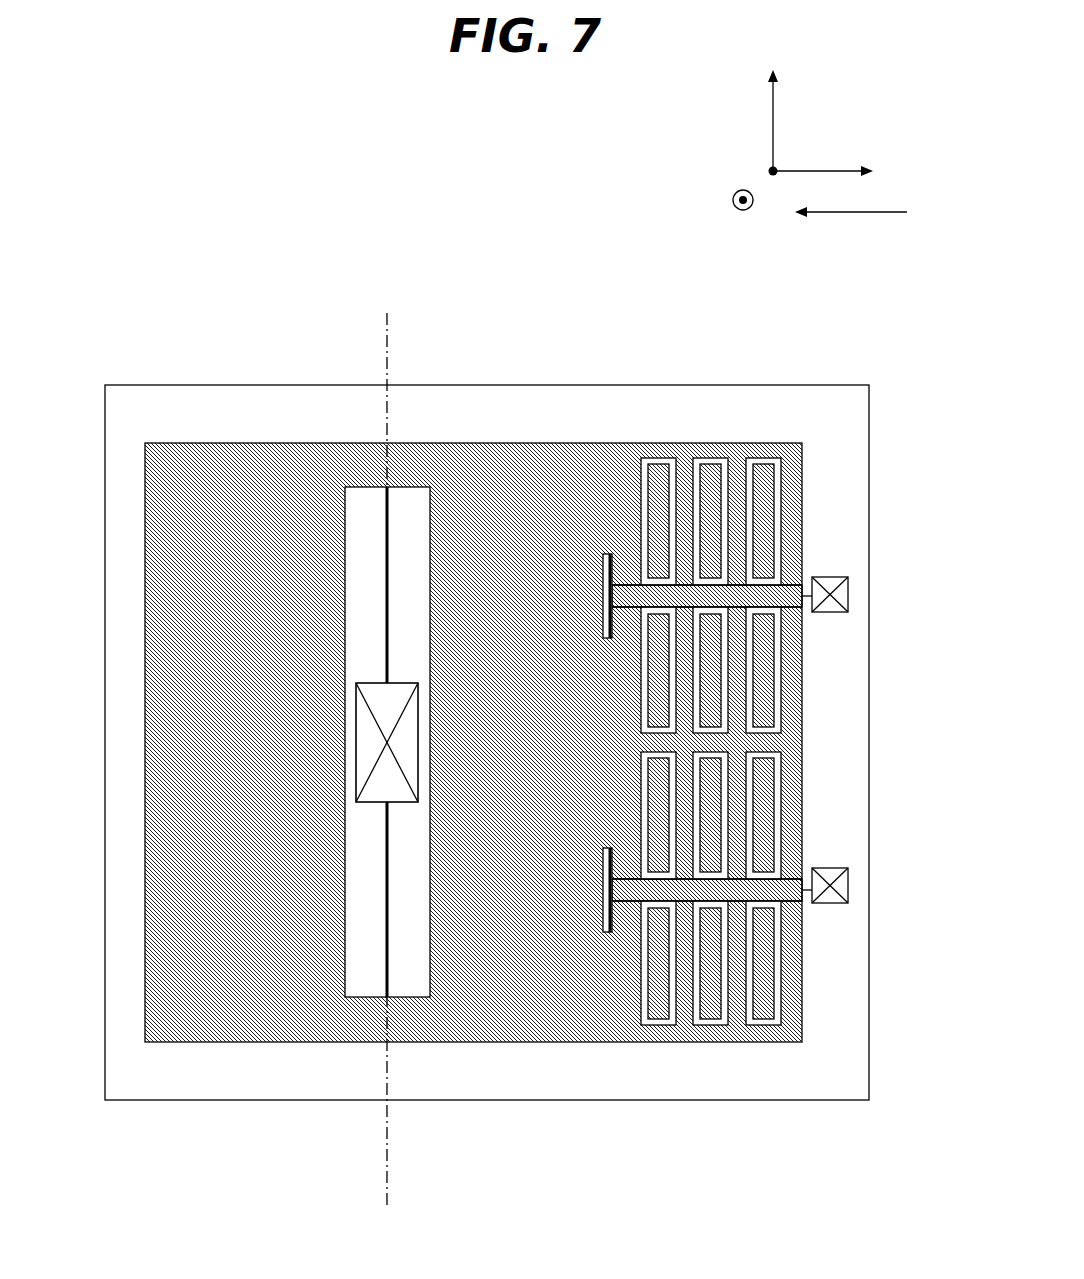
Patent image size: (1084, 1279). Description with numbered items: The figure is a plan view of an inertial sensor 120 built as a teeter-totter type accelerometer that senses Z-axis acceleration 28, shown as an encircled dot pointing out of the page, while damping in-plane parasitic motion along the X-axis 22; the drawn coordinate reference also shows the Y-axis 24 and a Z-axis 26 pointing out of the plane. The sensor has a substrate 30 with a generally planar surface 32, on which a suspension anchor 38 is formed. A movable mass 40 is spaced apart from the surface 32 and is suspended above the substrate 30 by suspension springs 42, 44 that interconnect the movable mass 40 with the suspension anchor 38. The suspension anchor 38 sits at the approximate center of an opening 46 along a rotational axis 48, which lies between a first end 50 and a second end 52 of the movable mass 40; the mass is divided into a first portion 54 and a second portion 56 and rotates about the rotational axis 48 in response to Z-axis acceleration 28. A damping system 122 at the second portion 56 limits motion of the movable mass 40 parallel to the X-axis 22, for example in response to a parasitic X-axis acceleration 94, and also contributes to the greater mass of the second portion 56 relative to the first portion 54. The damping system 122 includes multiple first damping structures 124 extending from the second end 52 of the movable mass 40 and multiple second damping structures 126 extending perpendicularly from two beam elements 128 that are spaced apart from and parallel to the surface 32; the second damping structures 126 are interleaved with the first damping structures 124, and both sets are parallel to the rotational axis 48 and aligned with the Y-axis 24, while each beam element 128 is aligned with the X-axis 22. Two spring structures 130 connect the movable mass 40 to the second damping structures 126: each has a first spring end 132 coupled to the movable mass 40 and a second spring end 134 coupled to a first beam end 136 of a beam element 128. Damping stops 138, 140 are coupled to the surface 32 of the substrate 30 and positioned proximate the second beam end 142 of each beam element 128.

The X-axis 22 is at (812, 168).
The Y-axis 24 is at (775, 125).
The Z axis 26 is at (771, 165).
The Z-axis acceleration 28 is at (732, 206).
The X-axis acceleration 94 is at (873, 214).
The inertial sensor 120 is at (230, 245).
The substrate 30 is at (155, 387).
The surface 32 is at (132, 431).
The movable mass 40 is at (275, 480).
The opening 46 is at (358, 569).
The rotational axis 48 is at (384, 348).
The suspension spring 42 is at (386, 585).
The suspension spring 44 is at (386, 890).
The suspension anchor 38 is at (357, 772).
The first end 50 is at (150, 962).
The second end 52 is at (655, 1042).
The first portion 54 is at (169, 1021).
The second portion 56 is at (532, 1025).
The damping system 122 is at (838, 496).
The first damping structures 124 is at (738, 508).
The second damping structures 126 is at (656, 500).
The beam element 128 is at (750, 592).
The spring structure 130 is at (622, 580).
The first spring end 132 is at (608, 573).
The second spring end 134 is at (605, 580).
The first beam end 136 is at (605, 595).
The damping stop 138 is at (842, 578).
The damping stop 140 is at (842, 870).
The second beam end 142 is at (832, 614).